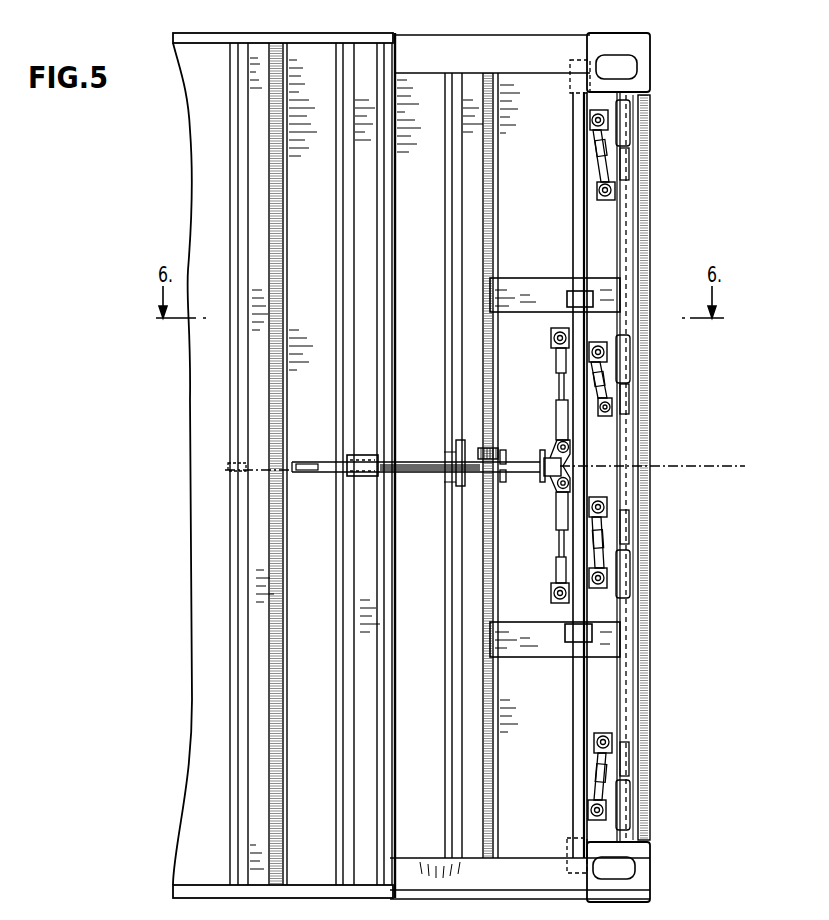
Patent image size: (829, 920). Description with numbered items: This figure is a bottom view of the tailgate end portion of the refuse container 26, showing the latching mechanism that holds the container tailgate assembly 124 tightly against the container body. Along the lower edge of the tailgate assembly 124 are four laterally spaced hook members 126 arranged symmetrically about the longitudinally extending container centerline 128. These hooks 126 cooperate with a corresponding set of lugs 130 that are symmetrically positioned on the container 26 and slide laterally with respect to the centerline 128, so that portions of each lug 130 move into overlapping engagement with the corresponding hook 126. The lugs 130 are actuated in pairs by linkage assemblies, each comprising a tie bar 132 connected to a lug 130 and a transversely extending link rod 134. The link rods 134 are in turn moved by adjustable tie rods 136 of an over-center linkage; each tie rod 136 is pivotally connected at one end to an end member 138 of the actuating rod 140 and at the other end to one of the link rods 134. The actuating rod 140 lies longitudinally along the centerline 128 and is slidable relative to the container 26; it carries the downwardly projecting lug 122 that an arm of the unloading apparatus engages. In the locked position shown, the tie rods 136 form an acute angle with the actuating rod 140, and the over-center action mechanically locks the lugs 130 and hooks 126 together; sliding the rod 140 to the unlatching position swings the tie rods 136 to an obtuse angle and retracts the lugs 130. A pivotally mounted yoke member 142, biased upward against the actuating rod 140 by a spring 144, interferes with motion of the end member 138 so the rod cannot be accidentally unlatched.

The container 26 is at (332, 70).
The downwardly projecting lug 122 is at (301, 462).
The container tailgate assembly 124 is at (652, 144).
The hook members 126 is at (614, 110).
The container centerline 128 is at (677, 470).
The lugs 130 is at (622, 170).
The tie bar 132 is at (597, 155).
The link rod 134 is at (576, 226).
The adjustable tie rods 136 is at (558, 410).
The end member 138 is at (569, 465).
The actuating rod 140 is at (394, 462).
The yoke member 142 is at (503, 472).
The spring 144 is at (497, 450).